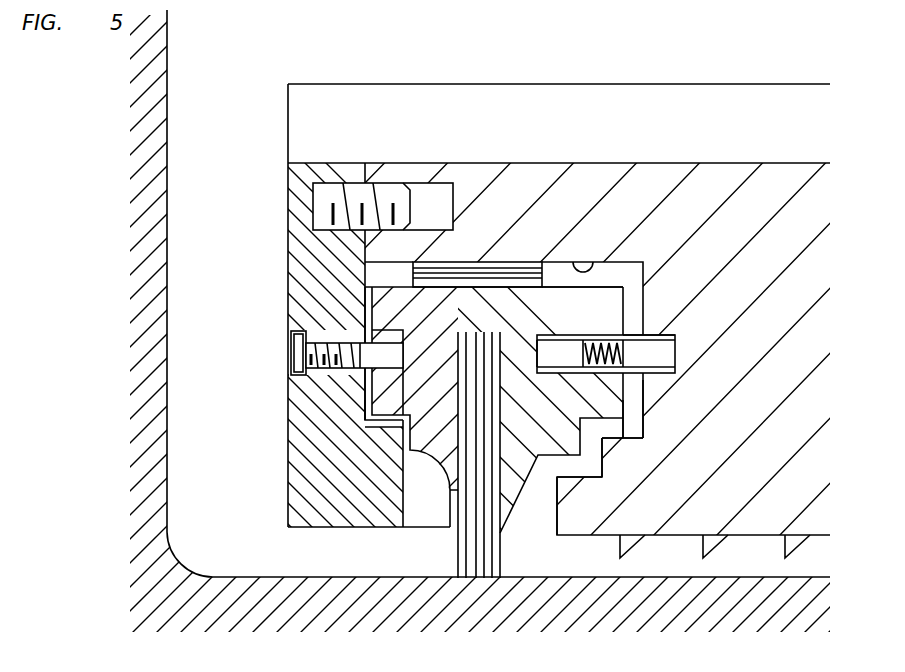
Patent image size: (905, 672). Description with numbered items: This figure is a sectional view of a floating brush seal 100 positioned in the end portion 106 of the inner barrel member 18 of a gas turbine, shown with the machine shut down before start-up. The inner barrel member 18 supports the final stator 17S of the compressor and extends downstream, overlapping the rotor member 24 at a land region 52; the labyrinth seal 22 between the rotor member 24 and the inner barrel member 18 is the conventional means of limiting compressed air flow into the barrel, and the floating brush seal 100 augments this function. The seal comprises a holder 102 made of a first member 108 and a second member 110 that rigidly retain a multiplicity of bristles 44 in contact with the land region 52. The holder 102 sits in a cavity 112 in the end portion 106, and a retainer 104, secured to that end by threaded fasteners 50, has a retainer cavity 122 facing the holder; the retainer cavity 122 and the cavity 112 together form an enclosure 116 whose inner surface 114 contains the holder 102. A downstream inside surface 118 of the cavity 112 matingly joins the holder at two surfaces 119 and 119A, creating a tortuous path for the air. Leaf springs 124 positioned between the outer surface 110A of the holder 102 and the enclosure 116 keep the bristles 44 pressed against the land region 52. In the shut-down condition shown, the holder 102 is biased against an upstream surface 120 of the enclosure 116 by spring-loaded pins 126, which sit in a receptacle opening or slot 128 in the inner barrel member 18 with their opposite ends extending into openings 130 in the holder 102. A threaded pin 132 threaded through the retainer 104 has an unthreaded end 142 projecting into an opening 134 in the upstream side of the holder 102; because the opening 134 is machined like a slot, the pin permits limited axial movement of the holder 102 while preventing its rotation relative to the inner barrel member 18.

The stator 17S is at (626, 132).
The inner barrel member 18 is at (800, 311).
The labyrinth seal 22 is at (800, 543).
The rotor member 24 is at (590, 622).
The bristle members 44 is at (500, 548).
The threaded fasteners 50 is at (290, 185).
The land region 52 is at (447, 535).
The floating brush seal 100 is at (640, 282).
The holder 102 is at (638, 415).
The retainer 104 is at (285, 455).
The end portion 106 is at (407, 163).
The first member 108 is at (562, 470).
The second member 110 is at (386, 430).
The outer surface 110A is at (558, 285).
The cavity 112 is at (613, 275).
The inner surface 114 is at (595, 272).
The enclosure 116 is at (390, 272).
The downstream inside surface 118 is at (643, 430).
The surface 119 is at (645, 392).
The surface 119A is at (603, 443).
The upstream surface 120 is at (345, 383).
The retainer cavity 122 is at (367, 300).
The leaf springs 124 is at (462, 266).
The spring-loaded pins 126 is at (655, 340).
The receptacle opening or slot 128 is at (675, 355).
The openings 130 is at (588, 322).
The threaded pin 132 is at (291, 345).
The opening 134 is at (396, 352).
The unthreaded end 142 is at (367, 408).